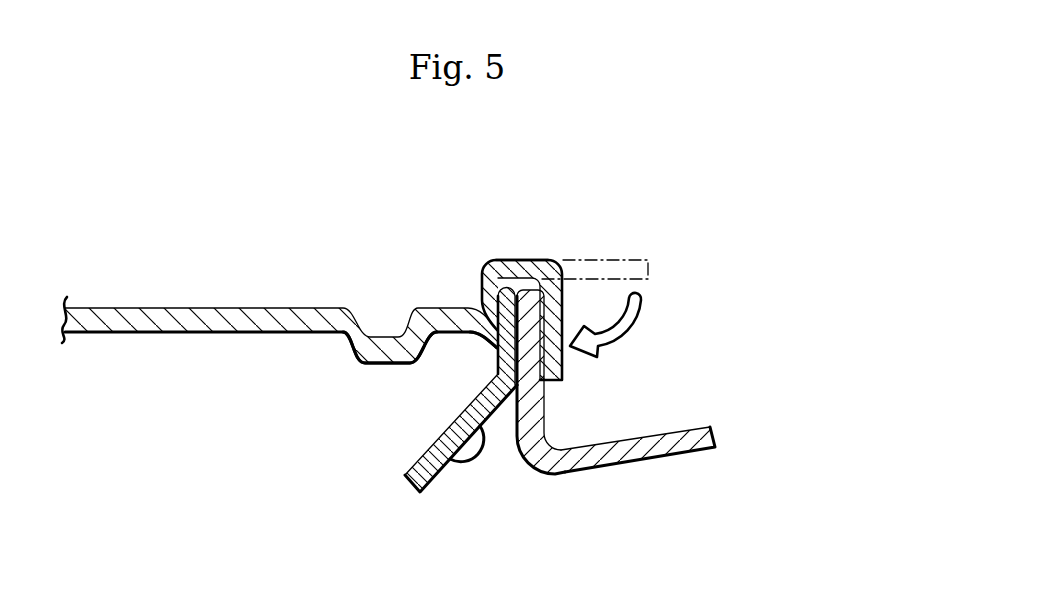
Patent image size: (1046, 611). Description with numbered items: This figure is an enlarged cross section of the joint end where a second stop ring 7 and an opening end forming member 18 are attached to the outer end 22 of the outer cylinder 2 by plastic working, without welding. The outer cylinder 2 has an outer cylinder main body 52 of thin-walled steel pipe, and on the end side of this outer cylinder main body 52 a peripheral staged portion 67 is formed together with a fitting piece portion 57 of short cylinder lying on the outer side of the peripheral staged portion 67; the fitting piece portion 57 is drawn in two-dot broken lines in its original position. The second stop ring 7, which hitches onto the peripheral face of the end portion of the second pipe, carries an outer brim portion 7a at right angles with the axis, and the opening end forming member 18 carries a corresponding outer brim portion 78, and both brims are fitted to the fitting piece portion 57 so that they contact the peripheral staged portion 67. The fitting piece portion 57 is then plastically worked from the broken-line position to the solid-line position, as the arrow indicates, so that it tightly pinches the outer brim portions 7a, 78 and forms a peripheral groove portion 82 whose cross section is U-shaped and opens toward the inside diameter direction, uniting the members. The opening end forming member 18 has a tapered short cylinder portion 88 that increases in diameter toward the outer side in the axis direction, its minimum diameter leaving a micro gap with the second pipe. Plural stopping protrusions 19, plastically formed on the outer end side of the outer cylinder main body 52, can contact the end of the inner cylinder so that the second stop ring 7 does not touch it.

The outer cylinder 2 is at (233, 302).
The outer cylinder main body 52 is at (160, 307).
The stopping protrusions 19 is at (382, 356).
The peripheral staged portion 67 is at (473, 342).
The outer end 22 is at (528, 256).
The peripheral groove portion 82 is at (504, 259).
The outer brim portion 78 is at (545, 305).
The opening end forming member 18 is at (573, 474).
The tapered short cylinder portion 88 is at (690, 437).
The second stop ring 7 is at (446, 480).
The outer brim portion 7a is at (495, 301).
The fitting piece portion 57 is at (640, 279).